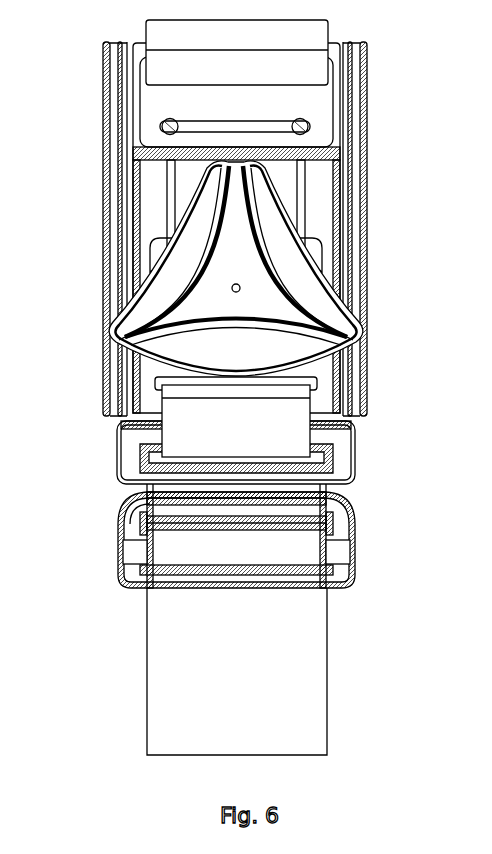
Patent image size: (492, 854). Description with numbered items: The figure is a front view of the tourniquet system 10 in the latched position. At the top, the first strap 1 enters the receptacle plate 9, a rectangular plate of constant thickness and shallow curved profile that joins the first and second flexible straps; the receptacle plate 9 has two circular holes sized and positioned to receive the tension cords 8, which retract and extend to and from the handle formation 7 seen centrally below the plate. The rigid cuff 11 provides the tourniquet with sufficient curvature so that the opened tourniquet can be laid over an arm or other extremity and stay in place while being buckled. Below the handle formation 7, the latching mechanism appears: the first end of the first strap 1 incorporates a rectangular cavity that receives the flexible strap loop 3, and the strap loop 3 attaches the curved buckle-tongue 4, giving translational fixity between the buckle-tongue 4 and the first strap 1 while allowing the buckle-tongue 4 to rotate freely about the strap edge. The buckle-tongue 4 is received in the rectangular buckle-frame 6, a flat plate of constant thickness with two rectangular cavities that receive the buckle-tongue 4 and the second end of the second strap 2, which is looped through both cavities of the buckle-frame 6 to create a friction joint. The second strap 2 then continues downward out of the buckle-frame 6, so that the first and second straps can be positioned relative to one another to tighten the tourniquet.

The first strap 1 is at (117, 221).
The second strap 2 is at (158, 36).
The strap loop 3 is at (172, 432).
The buckle-tongue 4 is at (345, 457).
The buckle-frame 6 is at (350, 578).
The handle formation 7 is at (120, 318).
The tension cords 8 is at (170, 200).
The receptacle plate 9 is at (138, 103).
The tourniquet system 10 is at (412, 144).
The rigid cuff 11 is at (330, 232).